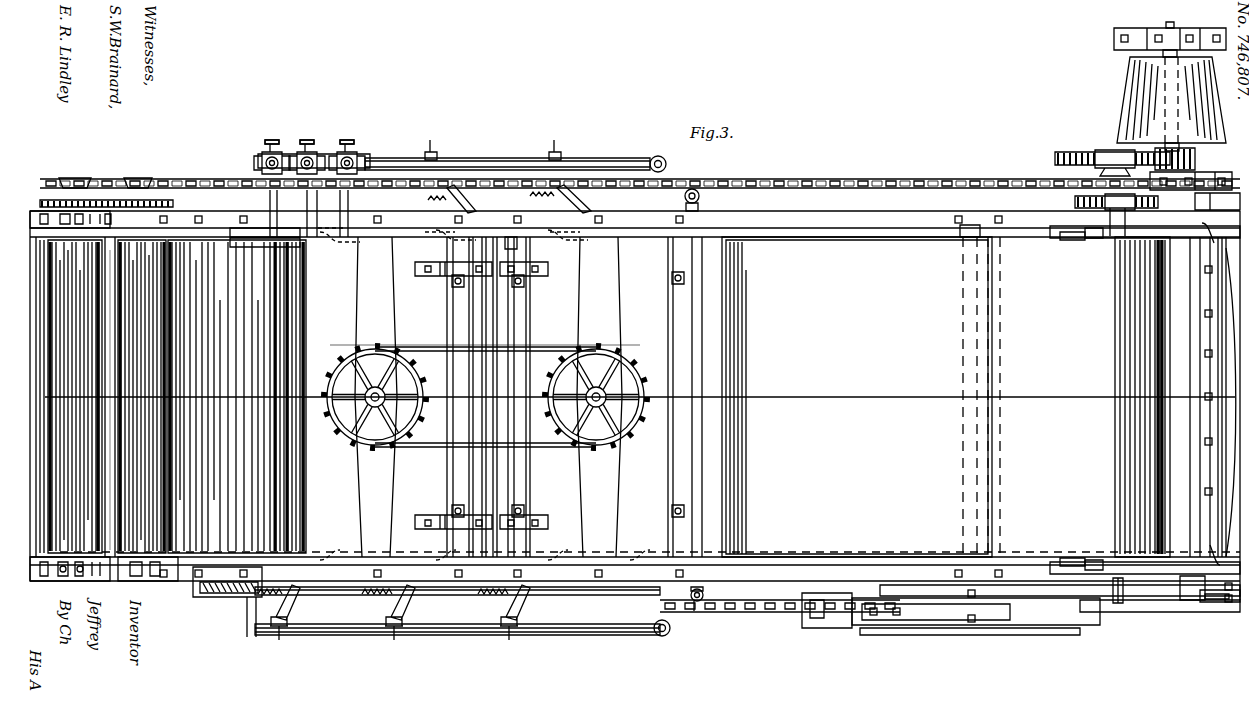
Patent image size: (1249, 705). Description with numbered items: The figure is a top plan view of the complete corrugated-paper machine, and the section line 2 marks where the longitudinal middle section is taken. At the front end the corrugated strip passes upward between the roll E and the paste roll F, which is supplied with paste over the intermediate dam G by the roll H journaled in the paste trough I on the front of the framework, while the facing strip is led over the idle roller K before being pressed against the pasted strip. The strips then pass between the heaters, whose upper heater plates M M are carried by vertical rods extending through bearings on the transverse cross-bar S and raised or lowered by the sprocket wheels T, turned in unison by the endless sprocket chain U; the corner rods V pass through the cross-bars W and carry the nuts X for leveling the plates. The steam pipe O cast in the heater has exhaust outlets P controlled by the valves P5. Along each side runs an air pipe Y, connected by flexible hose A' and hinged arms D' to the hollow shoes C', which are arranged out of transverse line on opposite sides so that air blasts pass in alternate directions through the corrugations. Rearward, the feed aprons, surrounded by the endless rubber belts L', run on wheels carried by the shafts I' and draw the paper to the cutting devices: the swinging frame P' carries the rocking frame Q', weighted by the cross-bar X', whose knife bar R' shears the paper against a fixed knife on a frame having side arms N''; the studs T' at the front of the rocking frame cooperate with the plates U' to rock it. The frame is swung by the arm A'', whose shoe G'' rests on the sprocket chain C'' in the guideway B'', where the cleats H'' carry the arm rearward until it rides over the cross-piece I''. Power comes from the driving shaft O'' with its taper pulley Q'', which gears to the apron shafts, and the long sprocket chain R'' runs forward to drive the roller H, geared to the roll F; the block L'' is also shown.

The upper heater plate M is at (635, 405).
The long sprocket chain R'' is at (640, 169).
The idle roller K is at (306, 335).
The paste roll H is at (75, 396).
The dam G is at (141, 396).
The paste roll F is at (128, 400).
The paste trough I is at (56, 396).
The main roller B is at (237, 396).
The section line 2 is at (42, 418).
The transverse cross-bar S is at (488, 397).
The sprocket wheel T is at (485, 395).
The cross-bar W is at (462, 472).
The endless sprocket chain U is at (485, 333).
The vertical rod V is at (452, 280).
The nut X is at (548, 389).
The hollow shoe C' is at (480, 394).
The exhaust outlet P is at (734, 361).
The valve P5 is at (278, 140).
The air pipe Y is at (517, 161).
The steam pipe O is at (694, 402).
The endless rubber belt L' is at (861, 391).
The rocking frame Q' is at (1158, 394).
The cross-bar X' is at (1191, 380).
The knife bar R' is at (1203, 397).
The driving shaft O'' is at (1170, 28).
The taper pulley Q'' is at (1159, 104).
The stud T' is at (1143, 359).
The plate U' is at (1145, 390).
The side arm N'' is at (1060, 376).
The swinging frame P' is at (1217, 204).
The hinged arm D' is at (350, 602).
The flexible hose A' is at (457, 612).
The sprocket chain C'' is at (780, 623).
The cleat H'' is at (827, 621).
The shoe G'' is at (976, 623).
The guideway B'' is at (1060, 617).
The cross-piece I'' is at (968, 619).
The arm A'' is at (1050, 624).
The shaft I' is at (1159, 603).
The block L'' is at (1217, 606).
The roll E is at (104, 569).